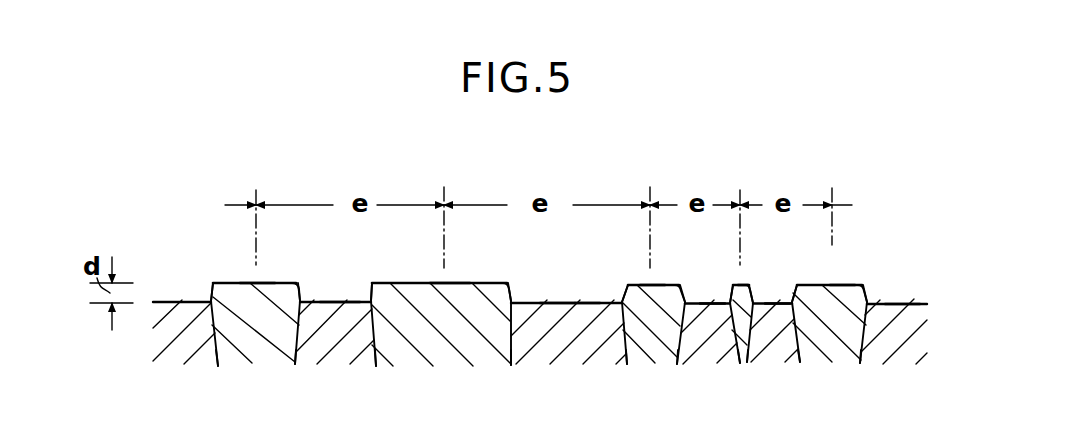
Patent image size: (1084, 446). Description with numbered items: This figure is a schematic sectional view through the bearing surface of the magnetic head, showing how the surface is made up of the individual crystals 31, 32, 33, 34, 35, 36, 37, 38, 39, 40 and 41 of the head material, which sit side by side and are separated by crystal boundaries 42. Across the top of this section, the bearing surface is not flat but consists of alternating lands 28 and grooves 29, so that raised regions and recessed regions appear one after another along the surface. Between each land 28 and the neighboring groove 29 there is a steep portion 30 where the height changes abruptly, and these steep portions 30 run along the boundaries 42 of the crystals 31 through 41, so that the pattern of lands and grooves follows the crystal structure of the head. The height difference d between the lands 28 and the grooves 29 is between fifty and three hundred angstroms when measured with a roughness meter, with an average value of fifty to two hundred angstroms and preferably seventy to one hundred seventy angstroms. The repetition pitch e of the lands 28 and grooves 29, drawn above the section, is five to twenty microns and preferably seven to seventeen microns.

The land 28 is at (268, 282).
The groove 29 is at (340, 301).
The steep portion 30 is at (213, 282).
The crystal 31 is at (190, 347).
The crystal 32 is at (258, 343).
The crystal 33 is at (343, 347).
The crystal 34 is at (446, 338).
The crystal 35 is at (545, 343).
The crystal 36 is at (610, 345).
The crystal 37 is at (660, 345).
The crystal 38 is at (743, 350).
The crystal 39 is at (789, 350).
The crystal 40 is at (855, 340).
The crystal 41 is at (903, 340).
The crystal boundary 42 is at (220, 366).